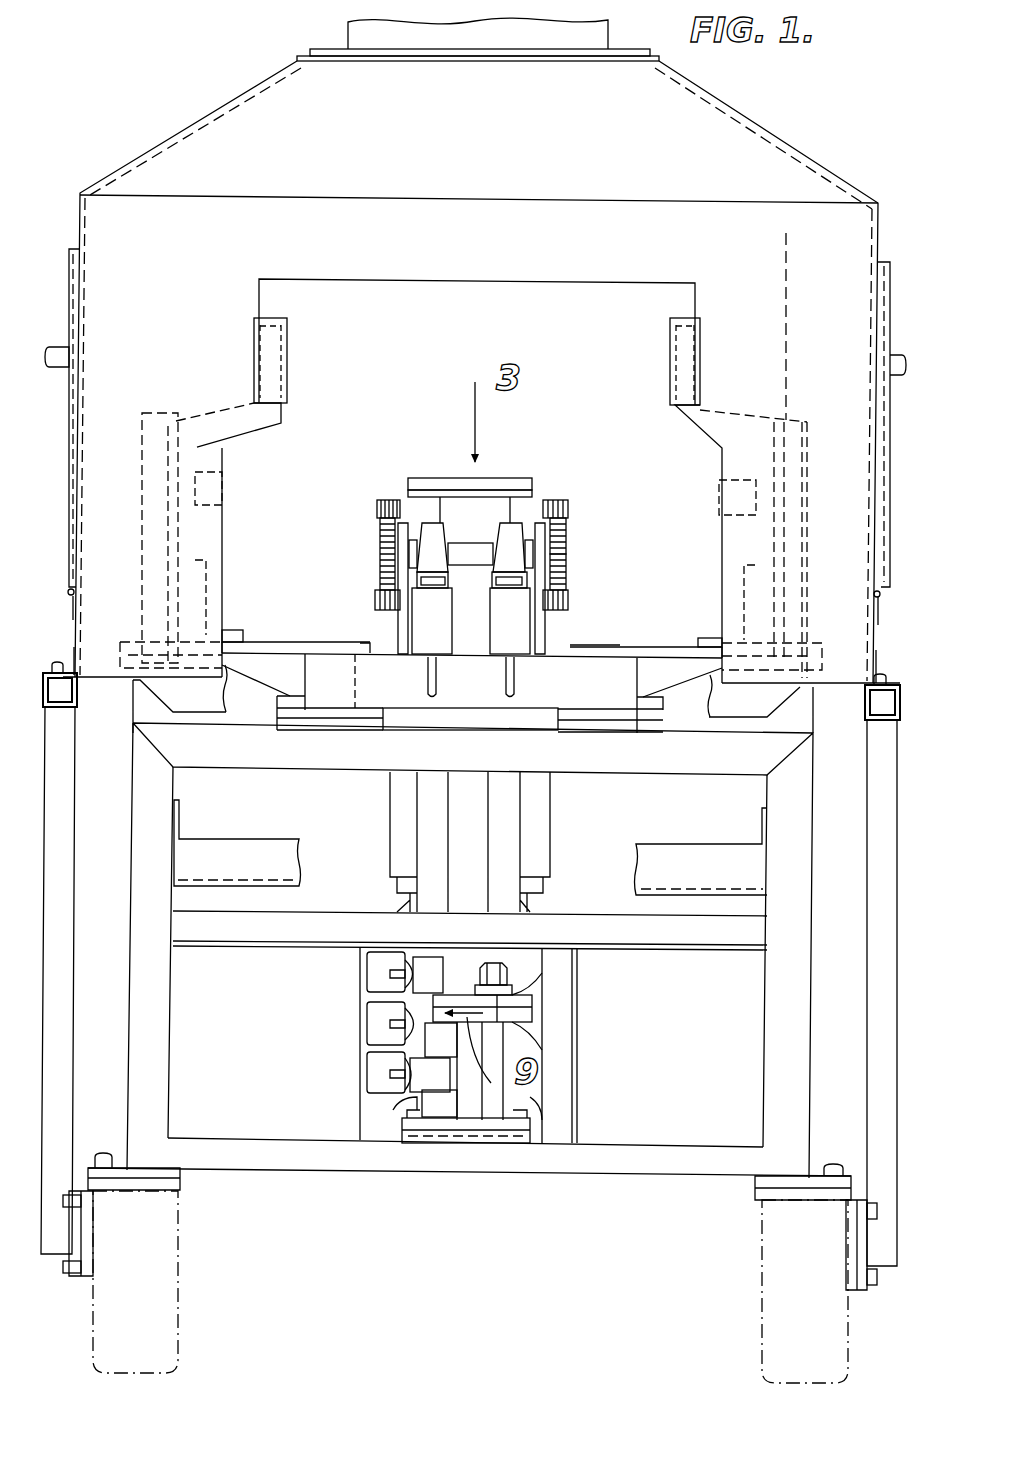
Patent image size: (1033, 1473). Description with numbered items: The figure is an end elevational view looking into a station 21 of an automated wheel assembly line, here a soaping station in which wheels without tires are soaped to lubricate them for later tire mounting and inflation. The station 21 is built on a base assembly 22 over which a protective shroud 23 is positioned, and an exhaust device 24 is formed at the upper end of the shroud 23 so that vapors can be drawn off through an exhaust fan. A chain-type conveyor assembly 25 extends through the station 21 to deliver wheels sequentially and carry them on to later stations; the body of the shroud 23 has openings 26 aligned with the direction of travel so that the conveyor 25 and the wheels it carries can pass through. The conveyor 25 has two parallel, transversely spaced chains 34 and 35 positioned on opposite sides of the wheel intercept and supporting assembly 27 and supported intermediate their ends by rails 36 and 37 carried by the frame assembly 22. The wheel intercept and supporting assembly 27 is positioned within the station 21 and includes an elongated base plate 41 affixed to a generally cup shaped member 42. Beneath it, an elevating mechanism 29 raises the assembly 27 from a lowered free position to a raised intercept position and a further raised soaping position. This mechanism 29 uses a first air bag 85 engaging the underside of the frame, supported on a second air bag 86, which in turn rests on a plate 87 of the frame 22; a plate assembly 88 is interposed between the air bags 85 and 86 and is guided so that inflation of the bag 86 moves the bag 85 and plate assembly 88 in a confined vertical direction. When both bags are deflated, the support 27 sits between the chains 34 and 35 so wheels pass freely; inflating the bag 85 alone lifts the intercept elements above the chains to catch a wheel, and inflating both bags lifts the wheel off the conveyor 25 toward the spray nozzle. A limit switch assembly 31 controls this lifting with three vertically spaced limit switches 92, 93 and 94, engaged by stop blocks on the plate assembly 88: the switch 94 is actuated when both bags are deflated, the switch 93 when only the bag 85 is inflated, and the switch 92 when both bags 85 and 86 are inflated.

The station 21 is at (810, 143).
The base assembly 22 is at (901, 788).
The protective shroud 23 is at (885, 226).
The exhaust device 24 is at (348, 32).
The conveyor assembly 25 is at (575, 508).
The openings 26 is at (366, 284).
The wheel intercept and supporting assembly 27 is at (520, 479).
The elevating mechanism 29 is at (556, 1007).
The limit switch assembly 31 is at (351, 1042).
The chain 34 is at (378, 509).
The chain 35 is at (568, 519).
The rail 36 is at (381, 554).
The rail 37 is at (568, 569).
The elongated base plate 41 is at (517, 503).
The cup shaped member 42 is at (535, 504).
The first air bag 85 is at (533, 912).
The second air bag 86 is at (540, 1027).
The plate 87 is at (619, 1146).
The plate assembly 88 is at (545, 989).
The limit switch 92 is at (374, 973).
The limit switch 93 is at (369, 1015).
The limit switch 94 is at (366, 1080).